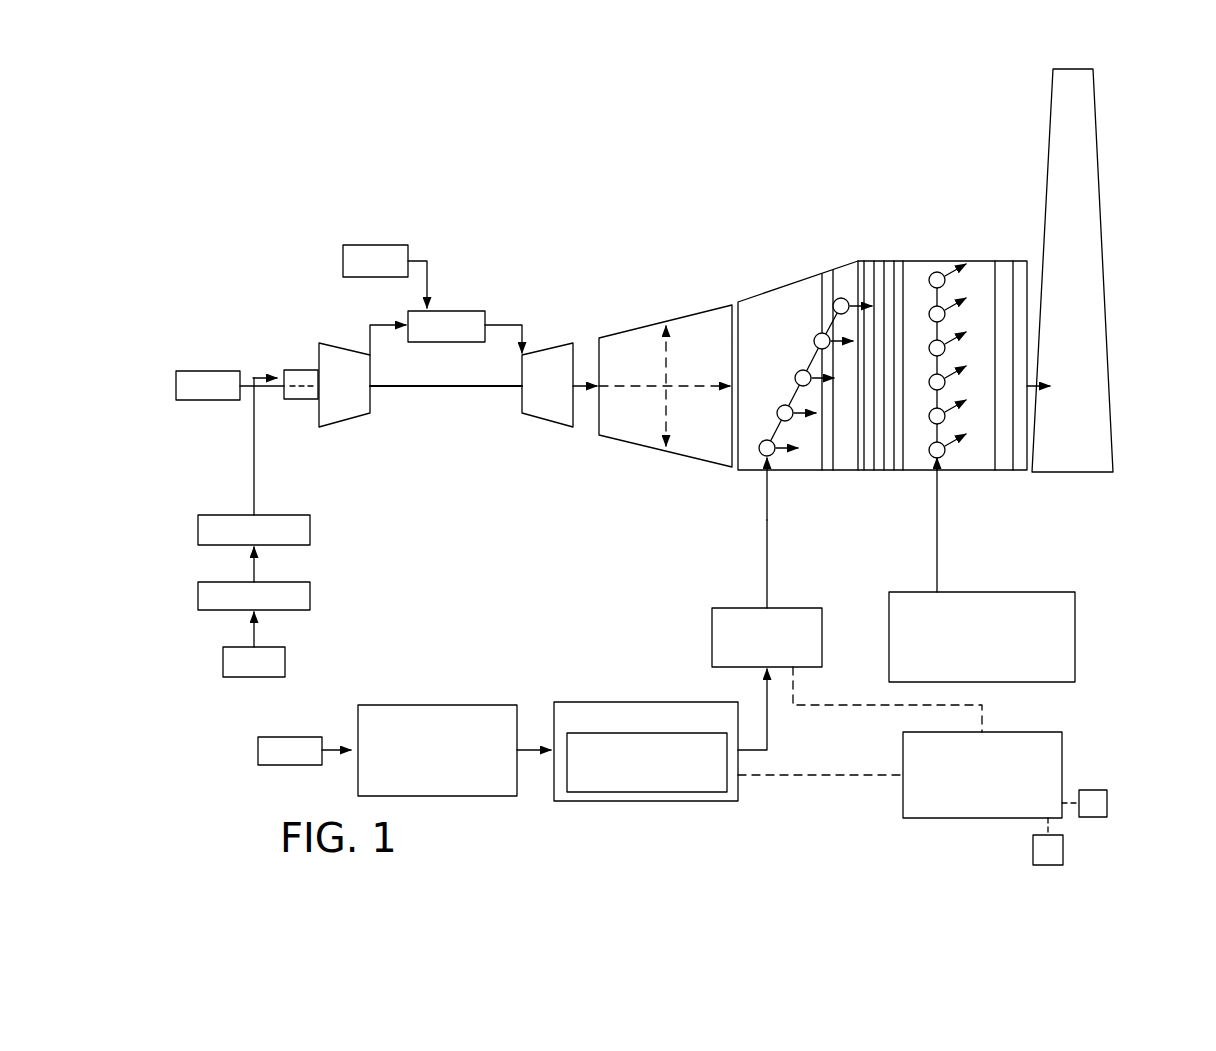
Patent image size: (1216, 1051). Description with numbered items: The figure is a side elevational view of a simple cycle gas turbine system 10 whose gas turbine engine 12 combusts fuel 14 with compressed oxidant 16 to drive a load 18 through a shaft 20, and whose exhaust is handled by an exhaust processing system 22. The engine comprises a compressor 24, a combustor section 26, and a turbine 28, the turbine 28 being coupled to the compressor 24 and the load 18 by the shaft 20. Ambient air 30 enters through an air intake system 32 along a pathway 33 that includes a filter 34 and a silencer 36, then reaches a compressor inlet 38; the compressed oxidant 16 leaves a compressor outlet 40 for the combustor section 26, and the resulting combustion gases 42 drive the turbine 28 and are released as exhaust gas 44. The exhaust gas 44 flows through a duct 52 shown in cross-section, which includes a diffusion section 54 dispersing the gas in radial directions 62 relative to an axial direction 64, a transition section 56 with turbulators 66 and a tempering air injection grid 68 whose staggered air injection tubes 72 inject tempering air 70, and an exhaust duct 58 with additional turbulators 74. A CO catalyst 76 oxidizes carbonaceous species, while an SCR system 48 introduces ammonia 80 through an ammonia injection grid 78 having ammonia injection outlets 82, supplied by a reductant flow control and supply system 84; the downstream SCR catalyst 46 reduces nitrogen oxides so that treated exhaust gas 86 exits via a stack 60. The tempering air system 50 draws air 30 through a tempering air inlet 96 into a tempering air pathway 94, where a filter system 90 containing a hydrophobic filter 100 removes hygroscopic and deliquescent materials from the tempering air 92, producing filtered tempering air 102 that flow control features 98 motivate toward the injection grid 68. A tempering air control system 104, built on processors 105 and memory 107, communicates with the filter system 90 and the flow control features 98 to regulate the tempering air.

The gas turbine system 10 is at (1128, 120).
The gas turbine engine 12 is at (518, 272).
The fuel 14 is at (373, 245).
The compressed oxidant 16 is at (384, 325).
The load 18 is at (210, 371).
The shaft 20 is at (447, 387).
The exhaust processing system 22 is at (942, 192).
The compressor 24 is at (343, 427).
The combustor section 26 is at (445, 311).
The turbine 28 is at (549, 427).
The air 30 is at (223, 662).
The air intake system 32 is at (347, 494).
The pathway 33 is at (254, 450).
The filter 34 is at (198, 596).
The silencer 36 is at (198, 530).
The compressor inlet 38 is at (299, 370).
The compressor outlet 40 is at (370, 353).
The combustion gases 42 is at (505, 325).
The exhaust gas 44 is at (583, 380).
The SCR catalyst 46 is at (993, 460).
The SCR system 48 is at (1102, 537).
The tempering air system 50 is at (775, 800).
The duct 52 is at (841, 256).
The diffusion section 54 is at (643, 325).
The transition section 56 is at (799, 281).
The exhaust duct 58 is at (945, 262).
The stack 60 is at (1106, 268).
The radial directions 62 is at (662, 420).
The axial direction 64 is at (690, 382).
The turbulators 66 is at (830, 460).
The tempering air injection grid 68 is at (789, 364).
The tempering air 70 is at (780, 452).
The air injection tubes 72 is at (759, 460).
The turbulators 74 is at (880, 462).
The CO catalyst 76 is at (899, 462).
The ammonia injection grid 78 is at (922, 271).
The ammonia 80 is at (953, 287).
The ammonia injection outlets 82 is at (941, 455).
The reductant flow control and supply system 84 is at (1075, 640).
The treated exhaust gas 86 is at (1034, 380).
The filter system 90 is at (646, 748).
The tempering air 92 is at (529, 749).
The tempering air pathway 94 is at (740, 572).
The tempering air inlet 96 is at (437, 705).
The flow control features 98 is at (712, 634).
The hydrophobic filter 100 is at (645, 792).
The filtered tempering air 102 is at (767, 710).
The tempering air control system 104 is at (1062, 776).
The processors 105 is at (1107, 805).
The memory 107 is at (1063, 853).